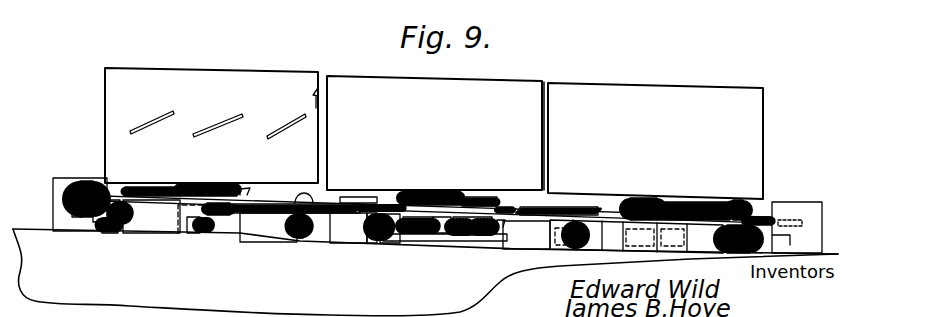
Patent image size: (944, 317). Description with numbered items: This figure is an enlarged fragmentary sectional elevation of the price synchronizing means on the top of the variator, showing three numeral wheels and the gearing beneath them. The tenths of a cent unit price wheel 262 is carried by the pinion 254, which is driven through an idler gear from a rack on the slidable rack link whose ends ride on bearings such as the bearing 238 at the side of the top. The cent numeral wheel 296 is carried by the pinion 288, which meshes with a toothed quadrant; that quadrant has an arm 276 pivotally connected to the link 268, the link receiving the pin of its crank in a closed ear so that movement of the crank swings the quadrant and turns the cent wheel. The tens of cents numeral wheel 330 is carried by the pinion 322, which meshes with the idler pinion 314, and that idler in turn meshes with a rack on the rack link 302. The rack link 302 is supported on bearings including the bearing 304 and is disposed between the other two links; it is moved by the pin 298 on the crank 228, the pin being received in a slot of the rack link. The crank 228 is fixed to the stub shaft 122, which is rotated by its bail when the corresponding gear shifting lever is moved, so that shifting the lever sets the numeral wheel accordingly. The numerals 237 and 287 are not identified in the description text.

The stub shaft 122 is at (440, 226).
The crank 228 is at (473, 241).
The shaft 237 is at (100, 197).
The bearing 238 is at (137, 215).
The pinion 254 is at (246, 191).
The tenths of a cent unit price wheel 262 is at (247, 70).
The link 268 is at (267, 216).
The arm 276 is at (162, 190).
The block 287 is at (345, 228).
The pinion 288 is at (407, 219).
The cent numeral wheel 296 is at (492, 88).
The pin 298 is at (500, 228).
The rack link 302 is at (758, 222).
The bearing 304 is at (735, 241).
The idler pinion 314 is at (734, 204).
The pinion 322 is at (632, 208).
The tens of cents numeral wheel 330 is at (632, 85).